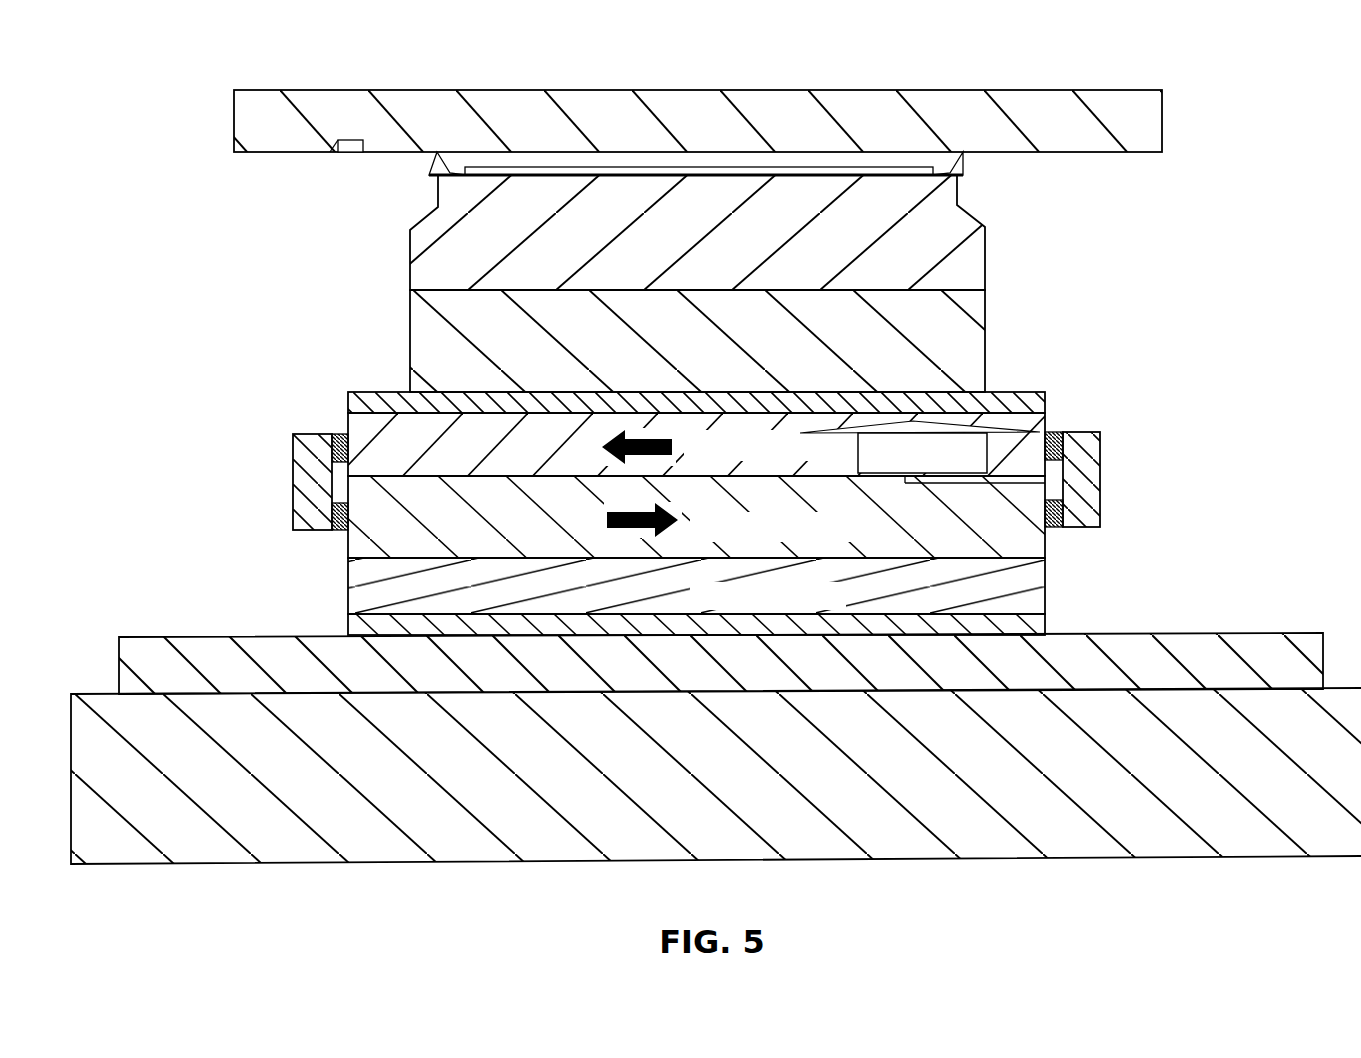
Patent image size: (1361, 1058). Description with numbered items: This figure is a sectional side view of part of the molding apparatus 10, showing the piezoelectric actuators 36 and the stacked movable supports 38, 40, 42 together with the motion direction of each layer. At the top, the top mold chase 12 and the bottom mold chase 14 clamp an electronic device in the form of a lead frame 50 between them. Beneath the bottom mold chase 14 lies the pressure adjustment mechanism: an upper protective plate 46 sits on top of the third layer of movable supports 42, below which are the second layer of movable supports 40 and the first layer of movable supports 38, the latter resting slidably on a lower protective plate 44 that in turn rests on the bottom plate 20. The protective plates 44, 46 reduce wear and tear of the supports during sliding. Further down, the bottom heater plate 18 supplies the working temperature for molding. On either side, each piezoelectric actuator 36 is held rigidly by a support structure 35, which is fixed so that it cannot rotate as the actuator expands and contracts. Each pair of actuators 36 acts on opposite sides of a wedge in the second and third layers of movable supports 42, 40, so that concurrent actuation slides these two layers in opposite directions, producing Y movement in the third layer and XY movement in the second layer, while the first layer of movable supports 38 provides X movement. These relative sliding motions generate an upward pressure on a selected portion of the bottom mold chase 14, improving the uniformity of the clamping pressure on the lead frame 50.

The molding apparatus 10 is at (1252, 95).
The top mold chase 12 is at (233, 129).
The bottom mold chase 14 is at (969, 250).
The bottom heater plate 18 is at (90, 700).
The bottom plate 20 is at (279, 644).
The support structure 35 is at (284, 489).
The piezoelectric actuators 36 is at (327, 411).
The first layer of movable supports 38 is at (1051, 597).
The second layer of movable supports 40 is at (1051, 542).
The third layer of movable supports 42 is at (1024, 430).
The lower protective plate 44 is at (1051, 625).
The upper protective plate 46 is at (1014, 397).
The lead frame 50 is at (983, 176).